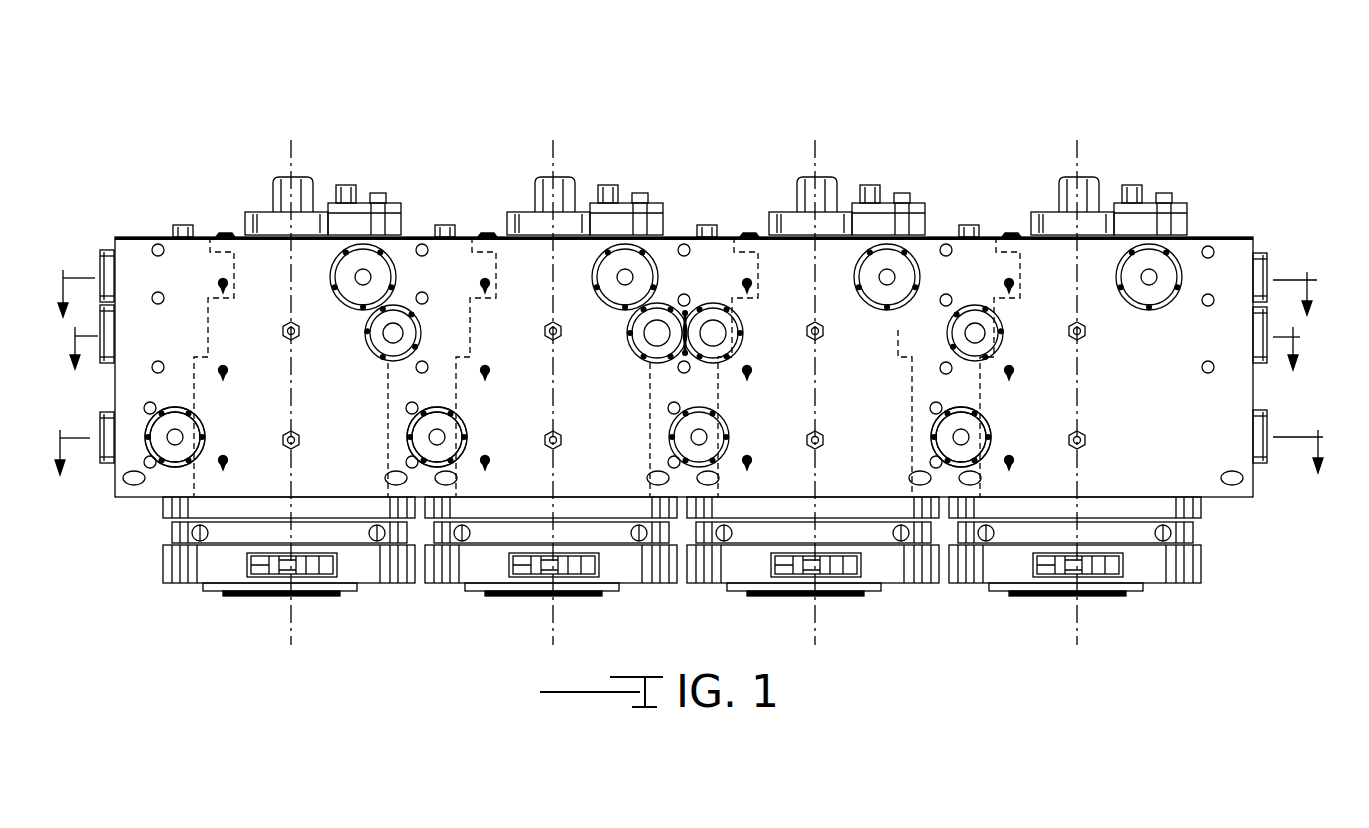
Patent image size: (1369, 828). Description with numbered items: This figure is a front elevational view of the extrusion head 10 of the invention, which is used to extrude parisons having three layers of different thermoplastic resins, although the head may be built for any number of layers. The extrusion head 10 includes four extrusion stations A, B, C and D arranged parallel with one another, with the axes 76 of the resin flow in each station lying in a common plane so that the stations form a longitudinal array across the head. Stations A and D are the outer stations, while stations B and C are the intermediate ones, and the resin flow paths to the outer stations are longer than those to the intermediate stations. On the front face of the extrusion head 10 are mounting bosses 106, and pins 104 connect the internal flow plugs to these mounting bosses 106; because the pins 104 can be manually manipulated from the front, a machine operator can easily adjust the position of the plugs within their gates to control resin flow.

The extrusion head 10 is at (988, 112).
The axes of resin flow 76 is at (293, 146).
The pins 104 is at (394, 305).
The mounting bosses 106 is at (197, 413).
The extrusion station A is at (1005, 591).
The extrusion station B is at (731, 591).
The extrusion station C is at (465, 591).
The extrusion station D is at (203, 591).